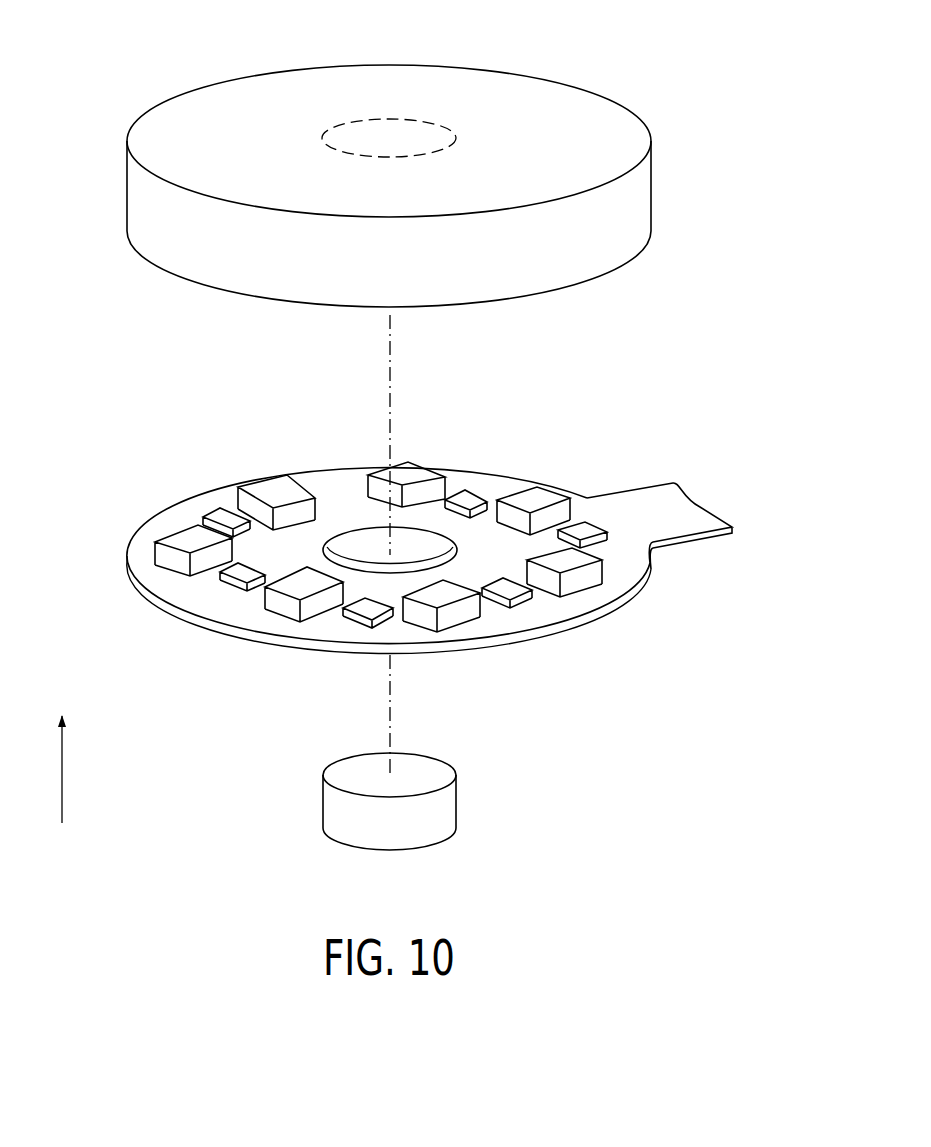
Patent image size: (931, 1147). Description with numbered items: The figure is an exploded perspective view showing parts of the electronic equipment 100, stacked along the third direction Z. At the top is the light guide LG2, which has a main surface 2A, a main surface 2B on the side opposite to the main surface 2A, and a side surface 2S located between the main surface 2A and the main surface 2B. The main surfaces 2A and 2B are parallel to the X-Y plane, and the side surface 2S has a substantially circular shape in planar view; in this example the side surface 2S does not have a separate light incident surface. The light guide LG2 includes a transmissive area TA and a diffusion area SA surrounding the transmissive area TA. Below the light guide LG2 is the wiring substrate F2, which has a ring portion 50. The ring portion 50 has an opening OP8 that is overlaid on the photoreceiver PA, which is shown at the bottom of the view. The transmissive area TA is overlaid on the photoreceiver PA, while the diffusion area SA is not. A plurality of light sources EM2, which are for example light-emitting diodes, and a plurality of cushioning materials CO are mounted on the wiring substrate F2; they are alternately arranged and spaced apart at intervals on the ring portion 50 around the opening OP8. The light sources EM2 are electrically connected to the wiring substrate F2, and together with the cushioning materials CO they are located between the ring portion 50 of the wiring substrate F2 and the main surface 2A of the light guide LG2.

The electronic equipment 100 is at (758, 258).
The light guide LG2 is at (643, 193).
The main surface 2B is at (182, 122).
The side surface 2S is at (127, 197).
The main surface 2A is at (173, 275).
The diffusion area SA is at (572, 117).
The transmissive area TA is at (393, 143).
The ring portion 50 is at (560, 623).
The wiring substrate F2 is at (673, 505).
The opening OP8 is at (375, 553).
The cushioning material CO is at (265, 490).
The light source EM2 is at (472, 500).
The photoreceiver PA is at (445, 805).
The third direction Z is at (62, 747).